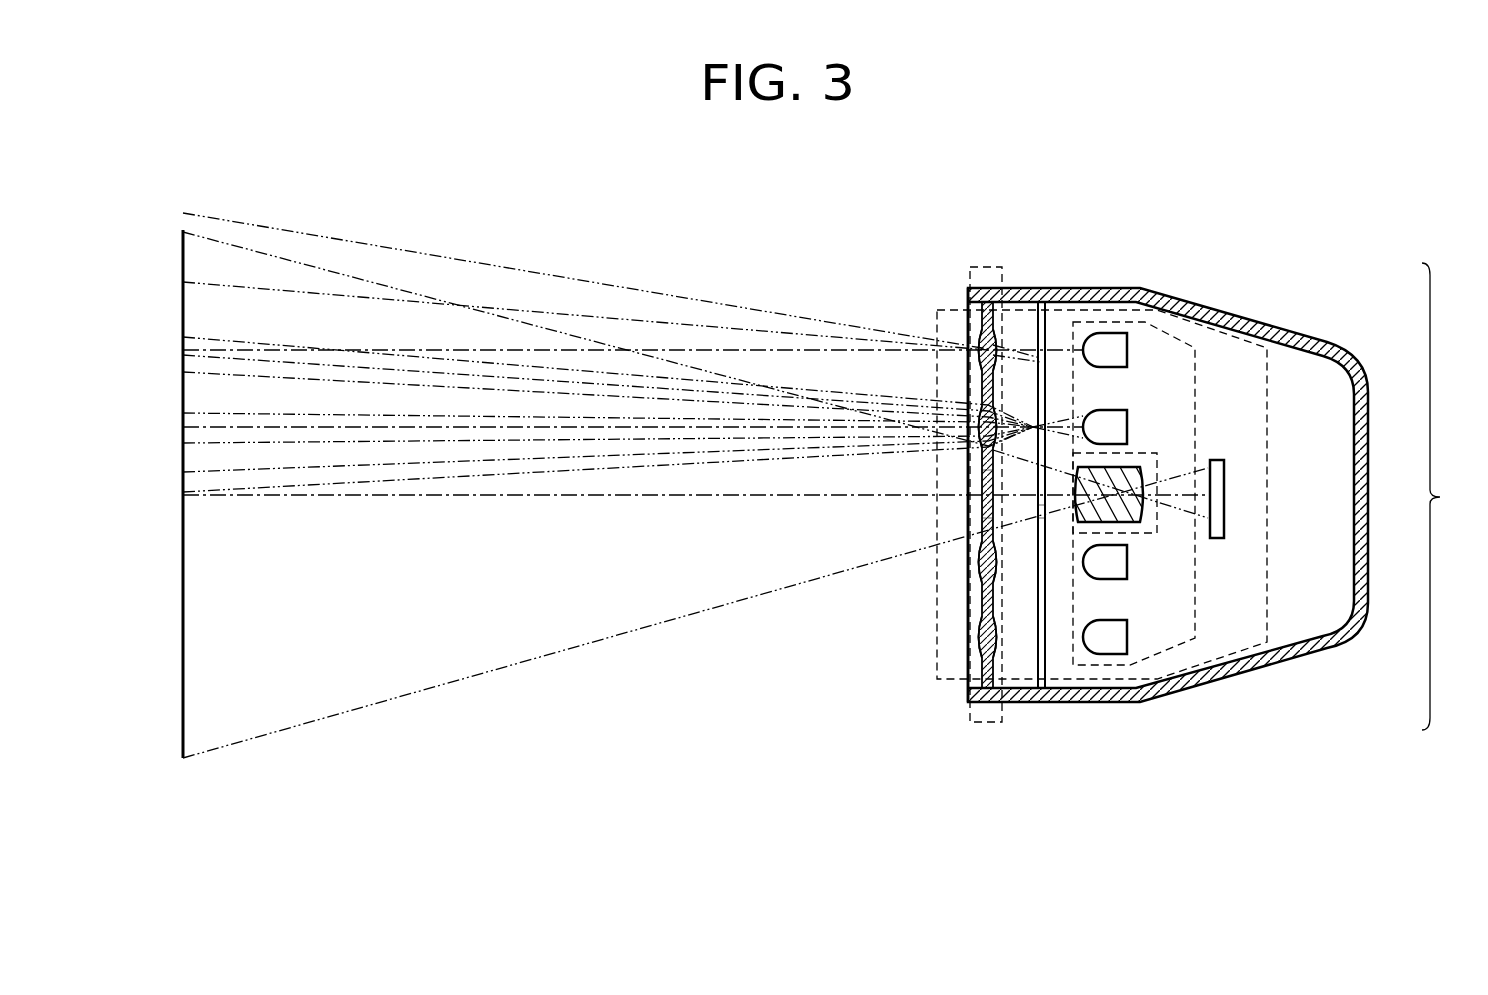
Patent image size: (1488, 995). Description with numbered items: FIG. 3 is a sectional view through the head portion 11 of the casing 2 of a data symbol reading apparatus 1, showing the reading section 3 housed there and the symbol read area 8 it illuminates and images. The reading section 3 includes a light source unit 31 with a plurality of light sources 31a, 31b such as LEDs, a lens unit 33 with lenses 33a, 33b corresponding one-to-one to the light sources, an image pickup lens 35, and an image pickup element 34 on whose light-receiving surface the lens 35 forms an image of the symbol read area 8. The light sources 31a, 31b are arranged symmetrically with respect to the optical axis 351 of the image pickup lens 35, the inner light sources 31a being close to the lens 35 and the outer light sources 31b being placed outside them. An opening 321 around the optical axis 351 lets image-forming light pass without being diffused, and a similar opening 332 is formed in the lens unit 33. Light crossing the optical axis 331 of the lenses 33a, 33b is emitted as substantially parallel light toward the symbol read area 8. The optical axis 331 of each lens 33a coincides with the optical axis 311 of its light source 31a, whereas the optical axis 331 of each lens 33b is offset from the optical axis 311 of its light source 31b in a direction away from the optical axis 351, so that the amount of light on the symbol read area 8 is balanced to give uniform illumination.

The data symbol reading apparatus 1 is at (1278, 261).
The casing 2 is at (1295, 329).
The reading section 3 is at (1268, 505).
The symbol read area 8 is at (183, 550).
The head portion 11 is at (1450, 496).
The light source unit 31 is at (1173, 338).
The light sources 31a is at (1110, 425).
The light sources 31b is at (1105, 355).
The optical axis of the light source 311 is at (1080, 352).
The opening 321 is at (1044, 512).
The lens unit 33 is at (978, 722).
The lenses 33a is at (979, 418).
The lenses 33b is at (979, 343).
The optical axis of the lenses 331 is at (760, 427).
The opening 332 is at (987, 475).
The image pickup element 34 is at (1215, 508).
The image pickup lens 35 is at (1118, 522).
The optical axis of the image pickup lens 351 is at (667, 496).